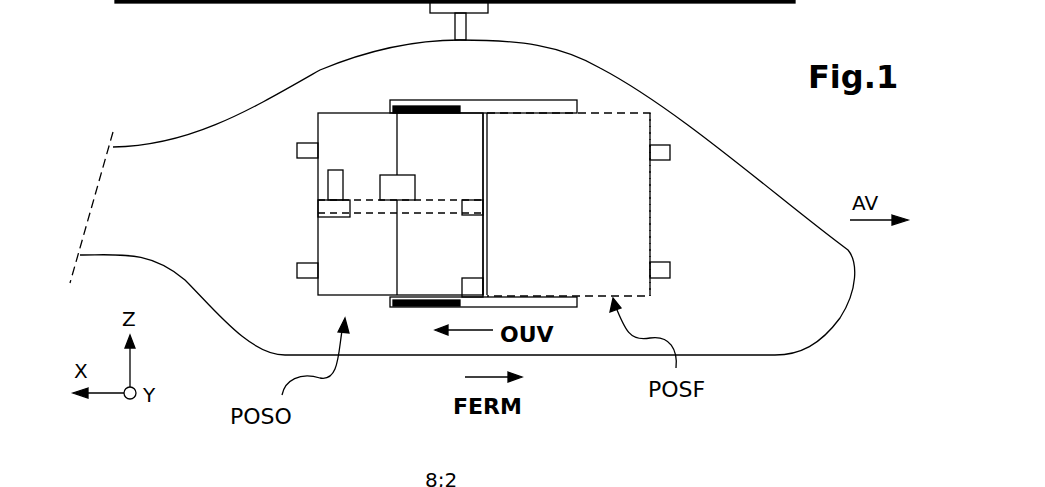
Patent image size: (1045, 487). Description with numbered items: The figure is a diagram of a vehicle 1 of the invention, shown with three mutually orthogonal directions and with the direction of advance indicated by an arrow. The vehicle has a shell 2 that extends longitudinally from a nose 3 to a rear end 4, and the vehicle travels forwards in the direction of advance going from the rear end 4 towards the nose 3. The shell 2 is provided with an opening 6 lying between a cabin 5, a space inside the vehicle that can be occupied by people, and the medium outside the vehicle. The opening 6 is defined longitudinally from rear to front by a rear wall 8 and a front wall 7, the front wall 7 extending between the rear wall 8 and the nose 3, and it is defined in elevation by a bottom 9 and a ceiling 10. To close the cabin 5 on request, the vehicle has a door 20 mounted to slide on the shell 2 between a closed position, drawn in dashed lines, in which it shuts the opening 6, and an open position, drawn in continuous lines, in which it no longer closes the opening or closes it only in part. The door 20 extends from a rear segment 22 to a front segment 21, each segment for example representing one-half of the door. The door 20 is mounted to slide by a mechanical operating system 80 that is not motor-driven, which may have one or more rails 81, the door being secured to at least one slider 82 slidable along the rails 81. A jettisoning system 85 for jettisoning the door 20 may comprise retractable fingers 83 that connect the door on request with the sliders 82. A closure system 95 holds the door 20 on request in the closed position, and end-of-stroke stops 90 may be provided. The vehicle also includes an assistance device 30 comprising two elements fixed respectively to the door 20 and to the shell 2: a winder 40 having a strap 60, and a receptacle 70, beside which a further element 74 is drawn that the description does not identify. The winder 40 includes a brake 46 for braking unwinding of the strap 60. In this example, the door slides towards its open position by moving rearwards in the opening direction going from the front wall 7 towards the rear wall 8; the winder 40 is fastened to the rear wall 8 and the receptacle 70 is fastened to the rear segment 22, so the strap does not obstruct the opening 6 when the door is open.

The vehicle 1 is at (752, 386).
The shell 2 is at (540, 357).
The nose 3 is at (856, 274).
The rear end 4 is at (108, 200).
The cabin 5 is at (568, 204).
The opening 6 is at (632, 88).
The front wall 7 is at (671, 204).
The rear wall 8 is at (490, 190).
The bottom 9 is at (592, 290).
The ceiling 10 is at (601, 138).
The door 20 is at (318, 290).
The front segment 21 is at (450, 204).
The rear segment 22 is at (371, 204).
The assistance device 30 is at (490, 228).
The winder 40 is at (466, 200).
The brake 46 is at (487, 150).
The strap 60 is at (385, 218).
The receptacle 70 is at (316, 200).
The locking rod 74 is at (318, 208).
The operating system 80 is at (446, 100).
The rail 81 is at (414, 80).
The slider 82 is at (413, 113).
The retractable fingers 83 is at (400, 113).
The jettisoning system 85 is at (455, 190).
The end-of-stroke stops 90 is at (297, 150).
The closure system 95 is at (428, 298).